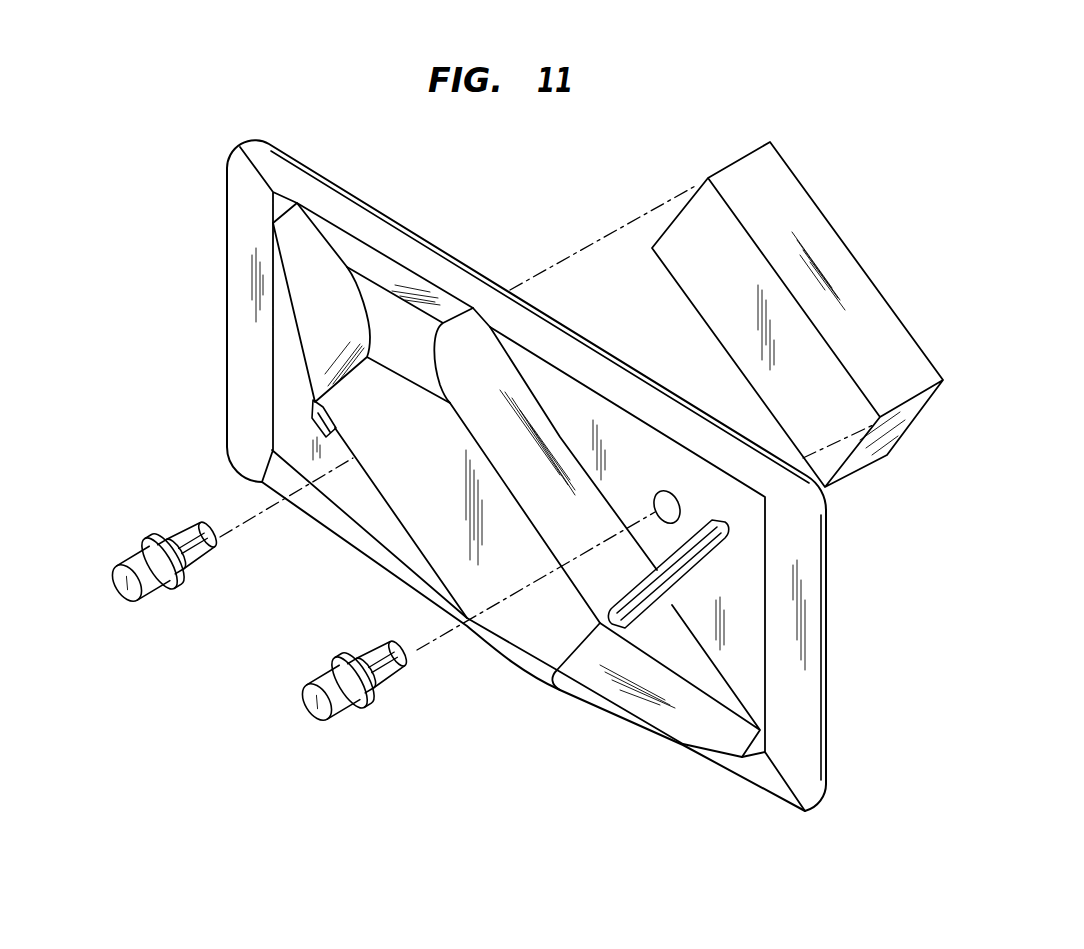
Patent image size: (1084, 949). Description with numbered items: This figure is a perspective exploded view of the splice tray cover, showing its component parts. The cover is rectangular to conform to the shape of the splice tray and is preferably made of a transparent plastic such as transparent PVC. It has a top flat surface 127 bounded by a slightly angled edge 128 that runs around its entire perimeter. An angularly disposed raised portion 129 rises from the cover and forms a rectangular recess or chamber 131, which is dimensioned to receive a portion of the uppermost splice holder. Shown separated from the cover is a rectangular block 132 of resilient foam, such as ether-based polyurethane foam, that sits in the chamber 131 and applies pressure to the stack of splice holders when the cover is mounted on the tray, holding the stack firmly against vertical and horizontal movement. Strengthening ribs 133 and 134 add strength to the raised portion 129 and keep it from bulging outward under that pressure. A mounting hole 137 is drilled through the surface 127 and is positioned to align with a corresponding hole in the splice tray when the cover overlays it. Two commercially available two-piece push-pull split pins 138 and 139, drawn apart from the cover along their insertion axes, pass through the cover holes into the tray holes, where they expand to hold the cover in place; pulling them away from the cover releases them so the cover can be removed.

The top flat surface 127 is at (317, 340).
The angled edge 128 is at (243, 307).
The raised portion 129 is at (393, 317).
The rectangular recess or chamber 131 is at (445, 532).
The rectangular block 132 is at (708, 178).
The strengthening rib 133 is at (312, 417).
The strengthening rib 134 is at (703, 565).
The mounting hole 137 is at (667, 498).
The two-piece push-pull split pin 138 is at (162, 544).
The two-piece push-pull split pin 139 is at (365, 698).